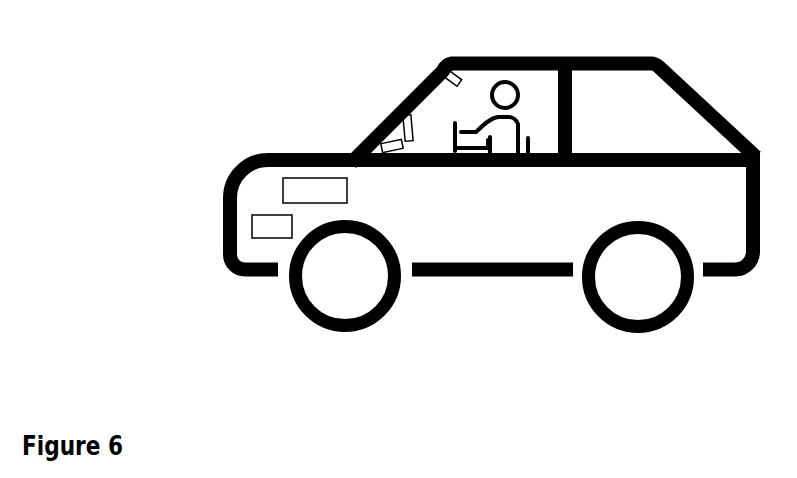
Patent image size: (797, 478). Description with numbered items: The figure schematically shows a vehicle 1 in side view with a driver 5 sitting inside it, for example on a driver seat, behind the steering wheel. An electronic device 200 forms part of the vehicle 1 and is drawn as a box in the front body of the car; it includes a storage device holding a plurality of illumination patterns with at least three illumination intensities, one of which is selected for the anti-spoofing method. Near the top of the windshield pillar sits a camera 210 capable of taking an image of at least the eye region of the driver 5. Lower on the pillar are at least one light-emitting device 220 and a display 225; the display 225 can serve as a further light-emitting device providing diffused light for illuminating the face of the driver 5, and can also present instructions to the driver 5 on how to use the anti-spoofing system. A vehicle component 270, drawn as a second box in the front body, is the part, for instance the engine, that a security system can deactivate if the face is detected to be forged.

The vehicle 1 is at (657, 58).
The driver 5 is at (507, 128).
The electronic device 200 is at (283, 193).
The camera 210 is at (428, 72).
The light-emitting device 220 is at (370, 147).
The display 225 is at (392, 118).
The vehicle component 270 is at (252, 228).